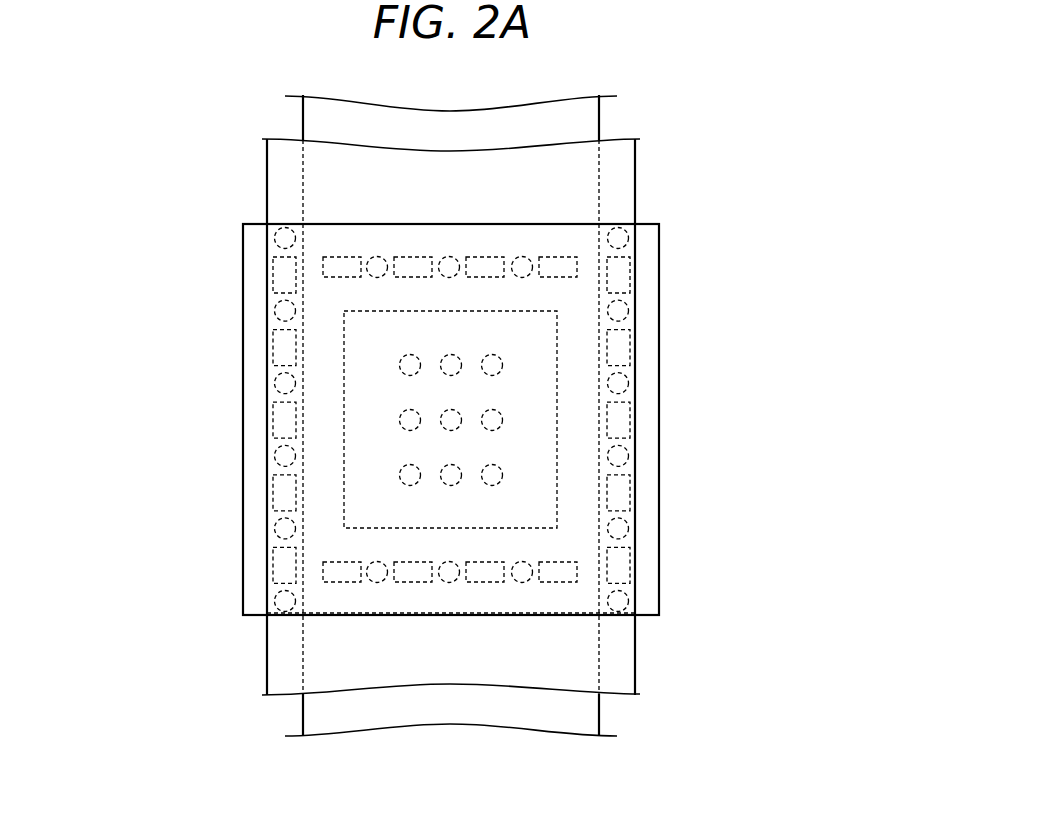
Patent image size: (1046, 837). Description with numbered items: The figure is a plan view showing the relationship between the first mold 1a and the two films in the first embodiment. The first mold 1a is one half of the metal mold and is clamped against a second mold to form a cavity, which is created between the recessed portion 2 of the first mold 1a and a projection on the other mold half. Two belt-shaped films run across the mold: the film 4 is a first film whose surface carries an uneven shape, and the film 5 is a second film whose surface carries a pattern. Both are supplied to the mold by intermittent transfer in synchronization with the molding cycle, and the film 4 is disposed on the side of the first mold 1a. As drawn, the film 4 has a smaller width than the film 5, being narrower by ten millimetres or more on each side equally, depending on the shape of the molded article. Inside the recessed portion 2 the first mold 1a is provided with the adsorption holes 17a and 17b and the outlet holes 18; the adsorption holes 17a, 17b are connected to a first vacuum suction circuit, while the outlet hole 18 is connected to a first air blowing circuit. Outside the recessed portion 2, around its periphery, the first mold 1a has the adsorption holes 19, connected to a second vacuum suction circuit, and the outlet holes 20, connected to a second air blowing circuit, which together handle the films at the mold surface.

The first mold 1a is at (662, 572).
The recessed portion 2 is at (557, 398).
The film 4 is at (583, 132).
The film 5 is at (627, 177).
The adsorption hole 17a is at (410, 476).
The adsorption hole 17b is at (410, 364).
The outlet hole 18 is at (410, 420).
The adsorption holes 19 is at (404, 265).
The outlet holes 20 is at (450, 265).